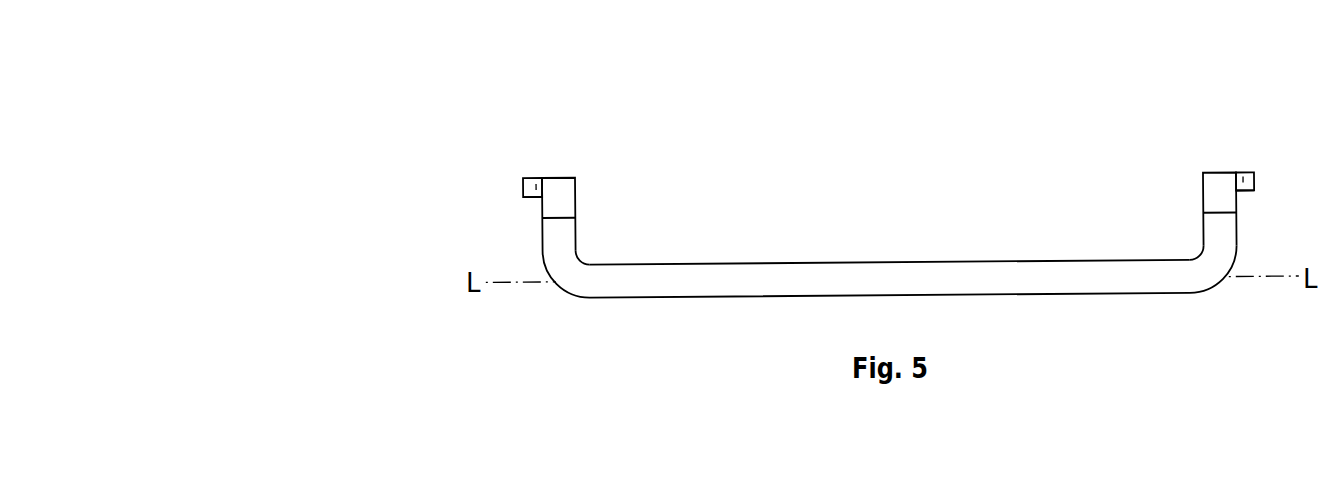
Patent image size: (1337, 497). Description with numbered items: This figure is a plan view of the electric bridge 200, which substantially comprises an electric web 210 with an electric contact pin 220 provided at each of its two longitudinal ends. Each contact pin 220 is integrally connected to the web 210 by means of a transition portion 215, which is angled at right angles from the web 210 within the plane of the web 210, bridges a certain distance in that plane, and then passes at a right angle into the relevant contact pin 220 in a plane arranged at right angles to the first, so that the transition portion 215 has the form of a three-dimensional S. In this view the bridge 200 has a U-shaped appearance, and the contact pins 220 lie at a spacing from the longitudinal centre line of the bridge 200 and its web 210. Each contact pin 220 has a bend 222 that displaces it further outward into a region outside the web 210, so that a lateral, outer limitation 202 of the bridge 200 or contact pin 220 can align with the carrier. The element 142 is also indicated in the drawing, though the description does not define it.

The electric bridge 200 is at (438, 59).
The grab bar 142 is at (923, 262).
The electric web 210 is at (1008, 282).
The transition portion 215 is at (567, 208).
The electric contact pin 220 is at (528, 177).
The bend 222 is at (538, 184).
The lateral, outer limitation 202 is at (523, 192).